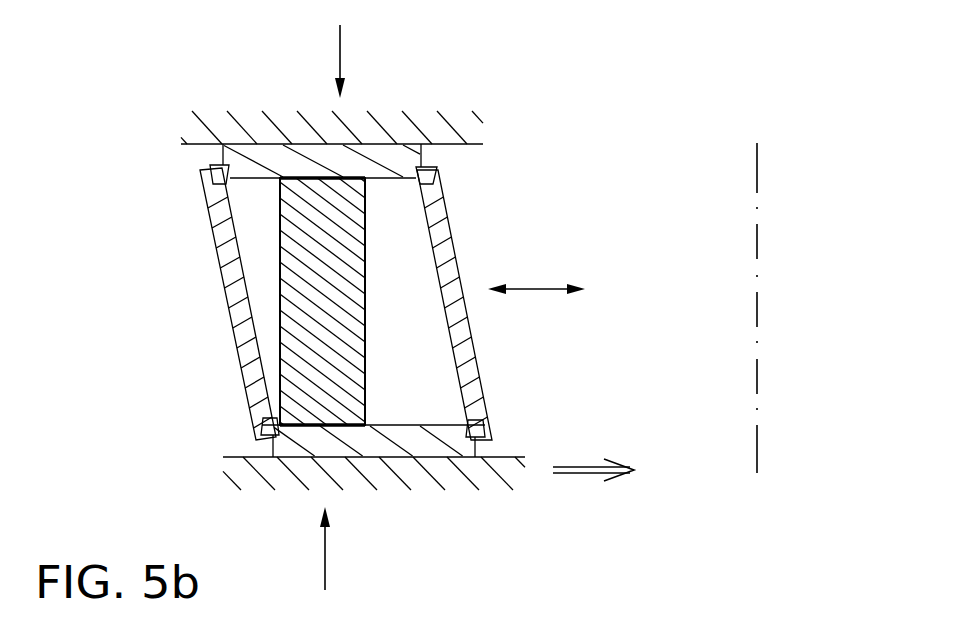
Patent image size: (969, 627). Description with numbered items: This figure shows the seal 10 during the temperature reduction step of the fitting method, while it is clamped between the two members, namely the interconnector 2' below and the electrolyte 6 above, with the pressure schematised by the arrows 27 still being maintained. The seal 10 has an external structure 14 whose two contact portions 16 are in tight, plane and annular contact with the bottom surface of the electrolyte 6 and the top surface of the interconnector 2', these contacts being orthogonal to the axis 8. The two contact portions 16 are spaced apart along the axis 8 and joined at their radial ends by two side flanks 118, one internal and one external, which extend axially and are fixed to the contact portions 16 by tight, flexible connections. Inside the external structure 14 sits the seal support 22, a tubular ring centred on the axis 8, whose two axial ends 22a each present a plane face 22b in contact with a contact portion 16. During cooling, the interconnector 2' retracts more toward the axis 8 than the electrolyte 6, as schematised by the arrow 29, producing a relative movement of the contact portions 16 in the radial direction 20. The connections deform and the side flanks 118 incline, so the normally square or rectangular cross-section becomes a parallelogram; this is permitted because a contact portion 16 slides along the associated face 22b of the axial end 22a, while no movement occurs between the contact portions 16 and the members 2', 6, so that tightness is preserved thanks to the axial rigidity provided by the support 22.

The interconnector 2' is at (347, 496).
The electrolyte 6 is at (437, 137).
The axis 8 is at (757, 156).
The seal 10 is at (185, 215).
The external structure 14 is at (218, 294).
The contact portions 16 is at (392, 156).
The radial direction 20 is at (538, 289).
The seal support 22 is at (374, 304).
The axial end 22a is at (345, 190).
The face 22b is at (306, 178).
The arrows 27 is at (340, 47).
The arrow 29 is at (580, 474).
The side flanks 118 is at (468, 366).